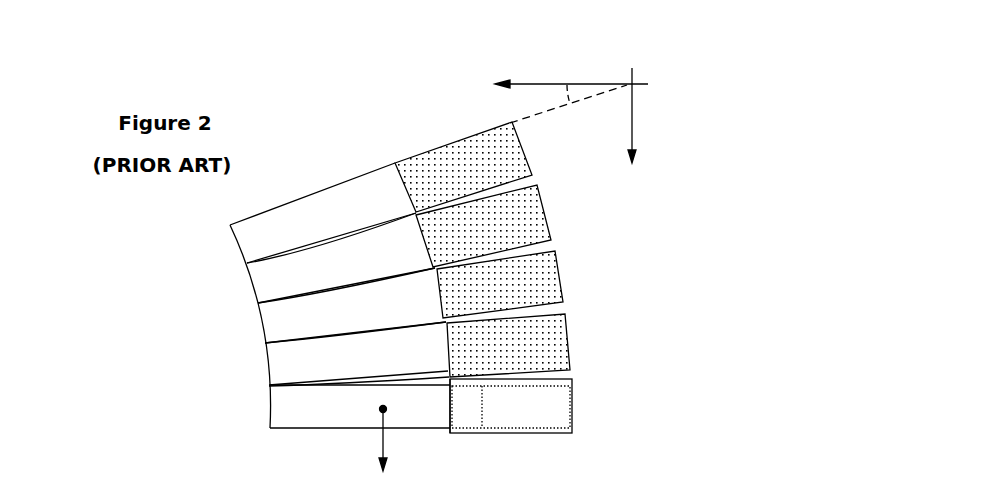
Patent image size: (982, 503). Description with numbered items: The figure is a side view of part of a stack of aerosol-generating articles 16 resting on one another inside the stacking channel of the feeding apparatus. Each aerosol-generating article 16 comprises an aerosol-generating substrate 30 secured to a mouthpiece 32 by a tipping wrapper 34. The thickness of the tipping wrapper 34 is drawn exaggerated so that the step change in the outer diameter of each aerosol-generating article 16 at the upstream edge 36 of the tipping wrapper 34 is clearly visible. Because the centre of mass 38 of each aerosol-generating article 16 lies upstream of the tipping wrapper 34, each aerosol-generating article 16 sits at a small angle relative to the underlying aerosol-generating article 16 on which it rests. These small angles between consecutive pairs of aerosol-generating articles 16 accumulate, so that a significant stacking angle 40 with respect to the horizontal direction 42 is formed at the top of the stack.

The aerosol-generating article 16 is at (263, 278).
The aerosol-generating substrate 30 is at (297, 408).
The mouthpiece 32 is at (543, 408).
The tipping wrapper 34 is at (543, 277).
The upstream edge of the tipping wrapper 36 is at (450, 434).
The centre of mass 38 is at (383, 449).
The stacking angle 40 is at (577, 92).
The horizontal direction 42 is at (557, 84).